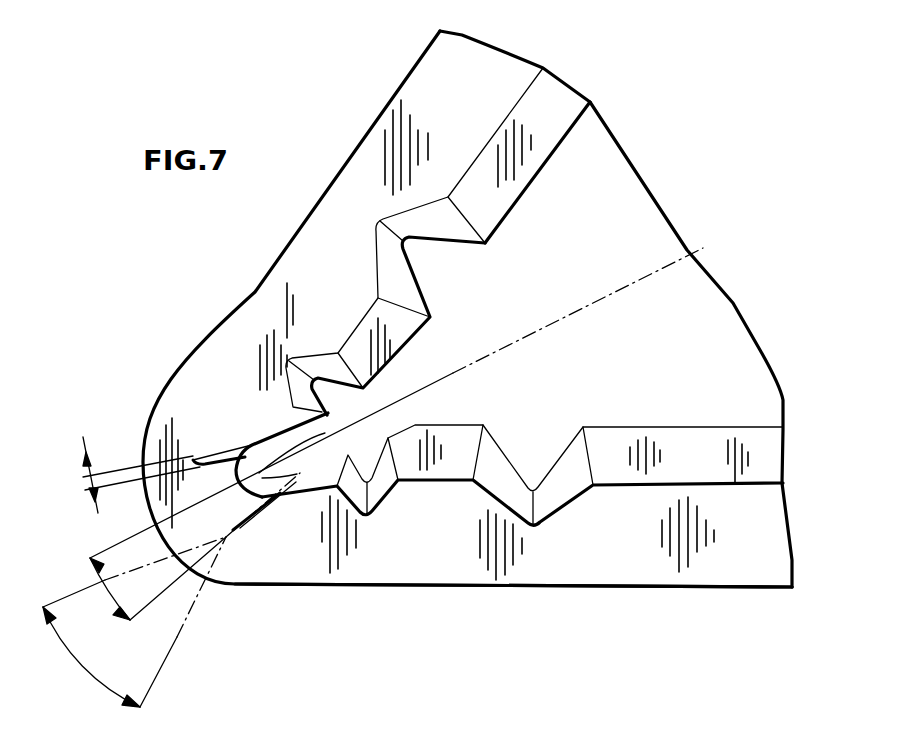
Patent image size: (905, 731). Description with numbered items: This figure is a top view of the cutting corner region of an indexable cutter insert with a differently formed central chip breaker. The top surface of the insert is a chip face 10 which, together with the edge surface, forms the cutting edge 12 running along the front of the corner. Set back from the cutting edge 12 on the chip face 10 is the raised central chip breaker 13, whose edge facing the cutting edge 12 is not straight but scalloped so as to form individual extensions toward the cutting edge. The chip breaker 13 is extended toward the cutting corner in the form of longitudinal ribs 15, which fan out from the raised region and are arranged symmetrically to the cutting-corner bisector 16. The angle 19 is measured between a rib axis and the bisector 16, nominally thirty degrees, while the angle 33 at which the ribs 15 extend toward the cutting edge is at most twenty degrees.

The chip face 10 is at (770, 540).
The cutting edge 12 is at (545, 588).
The central chip breaker 13 is at (651, 368).
The longitudinal ribs 15 is at (217, 463).
The cutting-corner bisector 16 is at (703, 248).
The angle 19 is at (100, 580).
The angle 33 is at (92, 668).